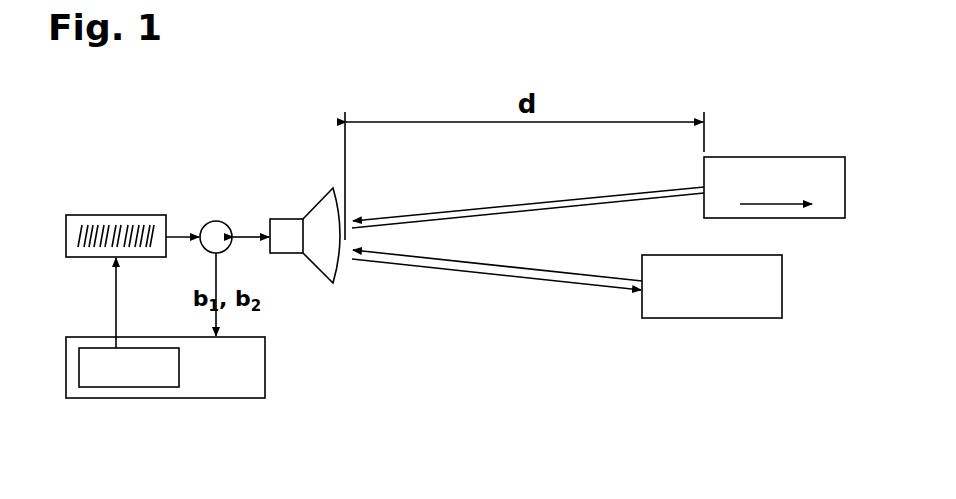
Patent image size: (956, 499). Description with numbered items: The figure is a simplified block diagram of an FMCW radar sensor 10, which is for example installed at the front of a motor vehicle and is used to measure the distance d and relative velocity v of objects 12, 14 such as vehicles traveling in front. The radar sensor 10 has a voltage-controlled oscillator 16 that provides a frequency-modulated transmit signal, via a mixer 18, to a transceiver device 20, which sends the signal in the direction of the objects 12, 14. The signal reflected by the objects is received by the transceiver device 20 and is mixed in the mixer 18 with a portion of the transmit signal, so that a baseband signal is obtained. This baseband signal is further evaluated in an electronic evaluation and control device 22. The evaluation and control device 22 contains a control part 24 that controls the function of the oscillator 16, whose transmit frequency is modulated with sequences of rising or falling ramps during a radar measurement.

The FMCW radar sensor 10 is at (252, 115).
The object 12 is at (798, 157).
The object 14 is at (710, 318).
The voltage-controlled oscillator 16 is at (124, 215).
The mixer 18 is at (216, 221).
The transceiver device 20 is at (285, 219).
The evaluation and control device 22 is at (266, 367).
The control part 24 is at (129, 387).